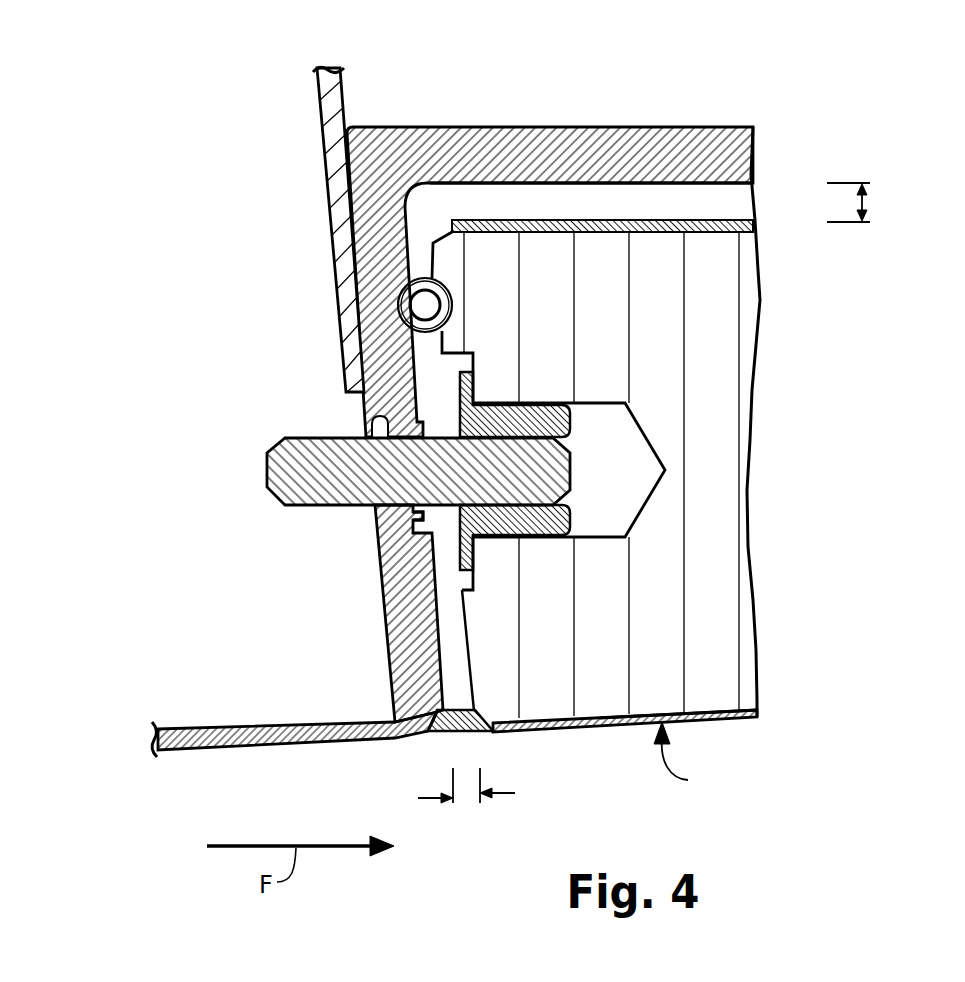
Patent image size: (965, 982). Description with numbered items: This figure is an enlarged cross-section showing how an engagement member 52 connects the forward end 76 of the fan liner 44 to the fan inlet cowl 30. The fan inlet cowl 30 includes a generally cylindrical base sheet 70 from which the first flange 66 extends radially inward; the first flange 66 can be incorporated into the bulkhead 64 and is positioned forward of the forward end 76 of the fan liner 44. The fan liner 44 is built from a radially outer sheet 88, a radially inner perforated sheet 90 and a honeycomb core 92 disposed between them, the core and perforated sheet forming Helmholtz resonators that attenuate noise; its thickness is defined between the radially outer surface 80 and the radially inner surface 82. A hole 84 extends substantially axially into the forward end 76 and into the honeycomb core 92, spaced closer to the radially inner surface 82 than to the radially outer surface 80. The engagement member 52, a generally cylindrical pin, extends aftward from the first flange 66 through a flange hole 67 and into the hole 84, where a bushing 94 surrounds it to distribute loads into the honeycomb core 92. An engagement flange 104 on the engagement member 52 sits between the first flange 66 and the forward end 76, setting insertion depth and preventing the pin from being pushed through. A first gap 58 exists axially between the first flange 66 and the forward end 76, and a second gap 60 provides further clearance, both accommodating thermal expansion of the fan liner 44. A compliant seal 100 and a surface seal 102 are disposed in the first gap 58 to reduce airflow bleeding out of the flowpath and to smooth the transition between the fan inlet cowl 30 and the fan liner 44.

The fan inlet cowl 30 is at (225, 762).
The fan liner 44 is at (685, 758).
The engagement member 52 is at (267, 468).
The first gap 58 is at (515, 793).
The second gap 60 is at (866, 203).
The bulkhead 64 is at (330, 187).
The first flange 66 is at (397, 638).
The flange hole 67 is at (387, 422).
The base sheet 70 is at (447, 150).
The forward end 76 is at (462, 605).
The radially outer surface 80 is at (700, 218).
The radially inner surface 82 is at (597, 731).
The hole 84 is at (619, 450).
The radially outer sheet 88 is at (718, 233).
The radially inner perforated sheet 90 is at (703, 711).
The honeycomb core 92 is at (588, 328).
The bushing 94 is at (515, 416).
The compliant seal 100 is at (404, 307).
The surface seal 102 is at (445, 740).
The engagement flange 104 is at (401, 512).